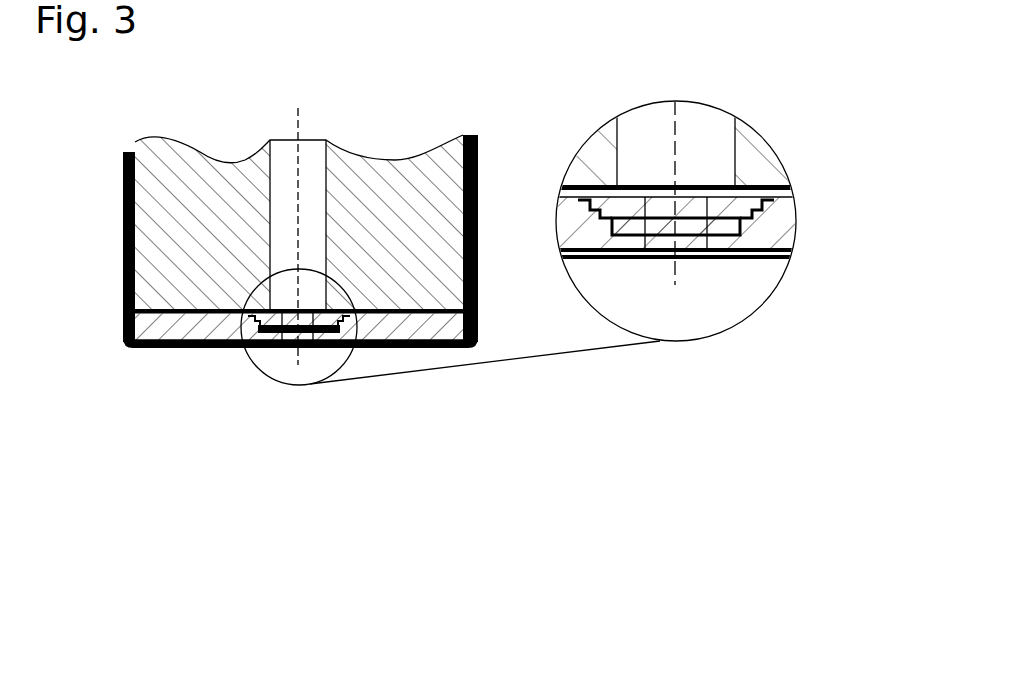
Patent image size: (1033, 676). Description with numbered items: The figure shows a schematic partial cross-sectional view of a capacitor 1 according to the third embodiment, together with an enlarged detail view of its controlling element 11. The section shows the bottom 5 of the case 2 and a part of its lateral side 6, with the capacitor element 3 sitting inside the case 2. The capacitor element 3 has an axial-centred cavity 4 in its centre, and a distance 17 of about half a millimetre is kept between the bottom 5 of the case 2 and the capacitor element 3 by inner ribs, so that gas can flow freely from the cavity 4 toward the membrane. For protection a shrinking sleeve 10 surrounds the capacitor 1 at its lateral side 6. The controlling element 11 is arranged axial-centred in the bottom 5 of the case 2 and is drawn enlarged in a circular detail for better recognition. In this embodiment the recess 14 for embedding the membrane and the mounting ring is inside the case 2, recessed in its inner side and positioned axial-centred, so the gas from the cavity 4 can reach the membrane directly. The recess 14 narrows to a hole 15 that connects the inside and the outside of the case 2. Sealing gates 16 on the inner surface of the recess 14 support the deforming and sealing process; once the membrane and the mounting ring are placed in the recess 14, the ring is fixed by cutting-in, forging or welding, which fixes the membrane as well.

The capacitor 1 is at (133, 135).
The case 2 is at (125, 267).
The capacitor element 3 is at (150, 217).
The cavity 4 is at (315, 162).
The bottom 5 is at (395, 353).
The lateral side 6 is at (483, 187).
The shrinking sleeve 10 is at (122, 308).
The controlling element 11 is at (588, 108).
The recess 14 is at (750, 200).
The hole 15 is at (692, 238).
The sealing gates 16 is at (723, 233).
The distance 17 is at (405, 318).